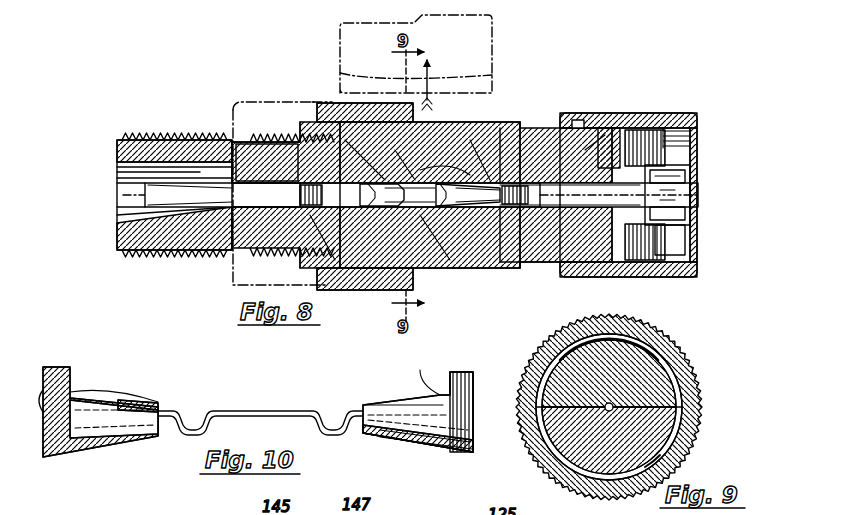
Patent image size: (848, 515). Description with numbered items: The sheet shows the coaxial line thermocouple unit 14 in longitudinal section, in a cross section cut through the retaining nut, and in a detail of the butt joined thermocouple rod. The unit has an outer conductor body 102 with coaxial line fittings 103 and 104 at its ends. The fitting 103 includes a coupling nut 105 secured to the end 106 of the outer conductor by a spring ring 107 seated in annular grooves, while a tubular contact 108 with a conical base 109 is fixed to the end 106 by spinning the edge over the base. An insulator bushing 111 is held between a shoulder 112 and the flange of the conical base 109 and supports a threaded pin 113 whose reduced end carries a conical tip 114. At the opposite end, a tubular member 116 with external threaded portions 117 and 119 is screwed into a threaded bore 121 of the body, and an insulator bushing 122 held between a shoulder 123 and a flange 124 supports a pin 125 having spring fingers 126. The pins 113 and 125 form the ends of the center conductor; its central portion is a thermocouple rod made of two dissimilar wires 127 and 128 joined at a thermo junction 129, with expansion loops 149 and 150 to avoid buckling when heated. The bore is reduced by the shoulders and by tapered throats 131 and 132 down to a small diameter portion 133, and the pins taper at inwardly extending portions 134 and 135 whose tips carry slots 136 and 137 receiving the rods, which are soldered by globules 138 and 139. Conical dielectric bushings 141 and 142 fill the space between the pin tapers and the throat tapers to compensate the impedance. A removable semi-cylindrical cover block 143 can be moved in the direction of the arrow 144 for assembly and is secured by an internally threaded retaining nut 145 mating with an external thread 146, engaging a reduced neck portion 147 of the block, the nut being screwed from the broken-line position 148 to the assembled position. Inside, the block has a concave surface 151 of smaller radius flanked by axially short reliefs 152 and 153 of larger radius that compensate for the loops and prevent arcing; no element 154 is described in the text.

In FIG. 8, the coaxial line thermocouple unit 14 is at (540, 74).
In FIG. 8, the outer conductor body 102 is at (526, 294).
In FIG. 9, the outer conductor body 102 is at (698, 450).
In FIG. 8, the coaxial line fitting 103 is at (670, 112).
In FIG. 8, the coaxial line fitting 104 is at (148, 128).
In FIG. 8, the coupling nut 105 is at (698, 126).
In FIG. 8, the end of outer conductor 106 is at (559, 113).
In FIG. 8, the spring ring 107 is at (583, 112).
In FIG. 8, the tubular contact 108 is at (688, 240).
In FIG. 8, the conical base 109 is at (582, 152).
In FIG. 8, the insulator bushing 111 is at (549, 269).
In FIG. 8, the shoulder 112 is at (523, 268).
In FIG. 8, the pin 113 is at (567, 187).
In FIG. 8, the conical tip 114 is at (688, 193).
In FIG. 8, the tubular member 116 is at (180, 256).
In FIG. 8, the external threaded portion 117 is at (137, 255).
In FIG. 8, the external threaded portion 119 is at (247, 264).
In FIG. 8, the threaded bore 121 is at (174, 212).
In FIG. 8, the insulator bushing 122 is at (287, 132).
In FIG. 8, the shoulder 123 is at (277, 162).
In FIG. 8, the flange 124 is at (222, 141).
In FIG. 8, the pin 125 is at (222, 195).
In FIG. 8, the spring fingers 126 is at (140, 190).
In FIG. 8, the thermocouple wire 127 is at (404, 223).
In FIG. 9, the thermocouple wire 127 is at (613, 403).
In FIG. 10, the thermocouple wire 127 is at (292, 410).
In FIG. 10, the thermocouple wire 128 is at (240, 408).
In FIG. 10, the thermo junction 129 is at (262, 409).
In FIG. 8, the tapered throat 131 is at (463, 206).
In FIG. 8, the tapered throat 132 is at (382, 207).
In FIG. 8, the small diameter portion 133 is at (436, 237).
In FIG. 9, the small diameter portion 133 is at (609, 440).
In FIG. 8, the tapered portion 134 is at (560, 192).
In FIG. 10, the tapered portion 134 is at (381, 436).
In FIG. 8, the tapered portion 135 is at (320, 195).
In FIG. 10, the tapered portion 135 is at (118, 438).
In FIG. 10, the slot 136 is at (423, 395).
In FIG. 10, the slot 137 is at (128, 398).
In FIG. 10, the solder globule 138 is at (380, 402).
In FIG. 10, the solder globule 139 is at (148, 400).
In FIG. 8, the conical dielectric bushing 141 is at (503, 206).
In FIG. 10, the conical dielectric bushing 141 is at (438, 444).
In FIG. 8, the conical dielectric bushing 142 is at (336, 237).
In FIG. 10, the conical dielectric bushing 142 is at (76, 452).
In FIG. 8, the cover block 143 is at (484, 105).
In FIG. 9, the cover block 143 is at (645, 358).
In FIG. 8, the arrow 144 is at (428, 80).
In FIG. 8, the retaining nut 145 is at (326, 102).
In FIG. 9, the retaining nut 145 is at (703, 394).
In FIG. 8, the external thread 146 is at (262, 100).
In FIG. 8, the neck portion 147 is at (430, 195).
In FIG. 9, the neck portion 147 is at (672, 368).
In FIG. 8, the sleeve position 148 is at (234, 104).
In FIG. 10, the expansion loop 149 is at (335, 410).
In FIG. 10, the expansion loop 150 is at (190, 410).
In FIG. 8, the concave semi-cylindrical surface 151 is at (445, 172).
In FIG. 9, the concave semi-cylindrical surface 151 is at (609, 373).
In FIG. 8, the semi-cylindrical relief 152 is at (472, 160).
In FIG. 8, the semi-cylindrical relief 153 is at (365, 160).
In FIG. 8, the body wall 154 is at (406, 165).